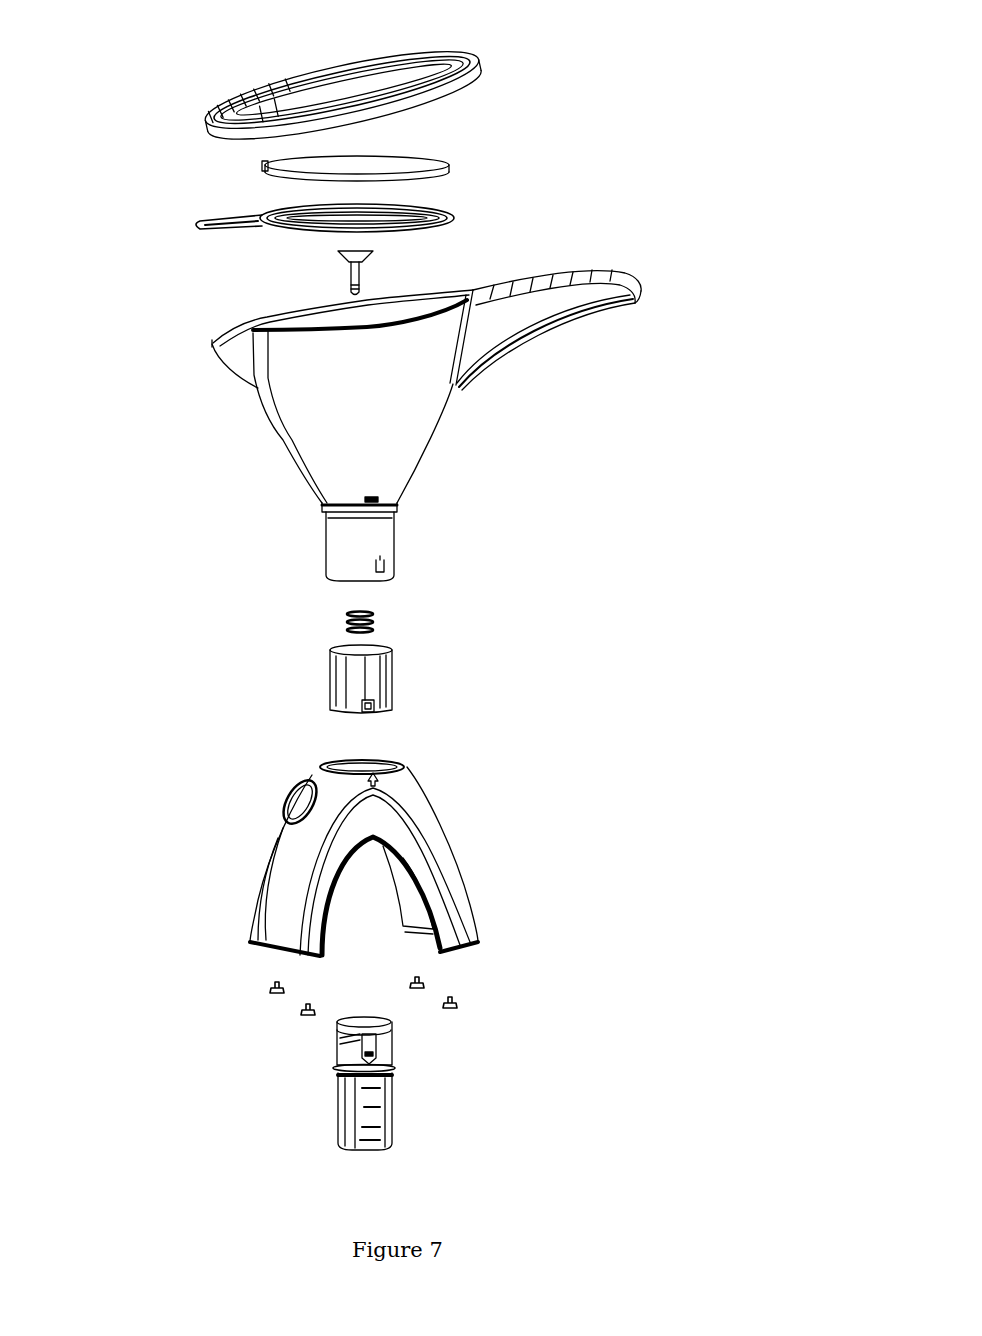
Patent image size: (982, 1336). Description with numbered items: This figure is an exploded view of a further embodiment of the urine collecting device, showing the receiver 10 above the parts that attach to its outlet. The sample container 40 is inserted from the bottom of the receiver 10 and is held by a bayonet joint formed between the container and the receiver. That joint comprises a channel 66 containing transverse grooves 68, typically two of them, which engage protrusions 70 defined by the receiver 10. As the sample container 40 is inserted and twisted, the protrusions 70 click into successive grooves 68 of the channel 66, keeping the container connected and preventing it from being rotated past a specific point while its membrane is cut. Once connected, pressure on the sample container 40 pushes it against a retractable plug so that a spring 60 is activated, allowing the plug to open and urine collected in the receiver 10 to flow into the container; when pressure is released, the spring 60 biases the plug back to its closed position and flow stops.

The receiver 10 is at (355, 413).
The spring 60 is at (375, 618).
The protrusions 70 is at (377, 712).
The channel 66 is at (372, 1032).
The transverse grooves 68 is at (367, 1054).
The sample container 40 is at (383, 1088).